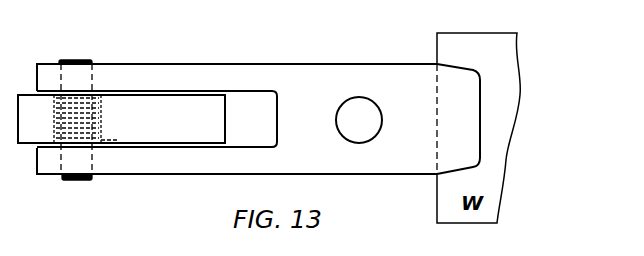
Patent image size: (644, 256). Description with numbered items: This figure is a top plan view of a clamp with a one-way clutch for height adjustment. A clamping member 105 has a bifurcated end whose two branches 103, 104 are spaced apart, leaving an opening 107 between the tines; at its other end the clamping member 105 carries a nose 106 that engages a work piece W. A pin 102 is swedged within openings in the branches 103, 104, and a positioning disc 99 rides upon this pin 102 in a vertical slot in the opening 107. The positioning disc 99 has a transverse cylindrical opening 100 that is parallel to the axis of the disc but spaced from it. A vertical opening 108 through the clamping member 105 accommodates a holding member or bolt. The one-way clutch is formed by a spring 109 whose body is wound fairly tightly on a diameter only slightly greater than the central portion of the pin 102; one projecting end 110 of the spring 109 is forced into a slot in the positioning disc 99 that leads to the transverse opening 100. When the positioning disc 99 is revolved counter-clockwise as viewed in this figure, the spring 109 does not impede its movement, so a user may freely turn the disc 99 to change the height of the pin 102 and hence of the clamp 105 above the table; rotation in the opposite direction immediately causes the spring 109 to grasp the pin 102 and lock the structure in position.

The positioning disc 99 is at (121, 119).
The transverse cylindrical opening 100 is at (98, 91).
The pin 102 is at (82, 180).
The branch of bifurcated end 103 is at (237, 161).
The branch of bifurcated end 104 is at (237, 77).
The clamping member 105 is at (307, 96).
The nose 106 is at (474, 137).
The opening 107 is at (247, 103).
The vertical opening 108 is at (359, 120).
The spring 109 is at (102, 116).
The projecting end of spring 110 is at (112, 141).